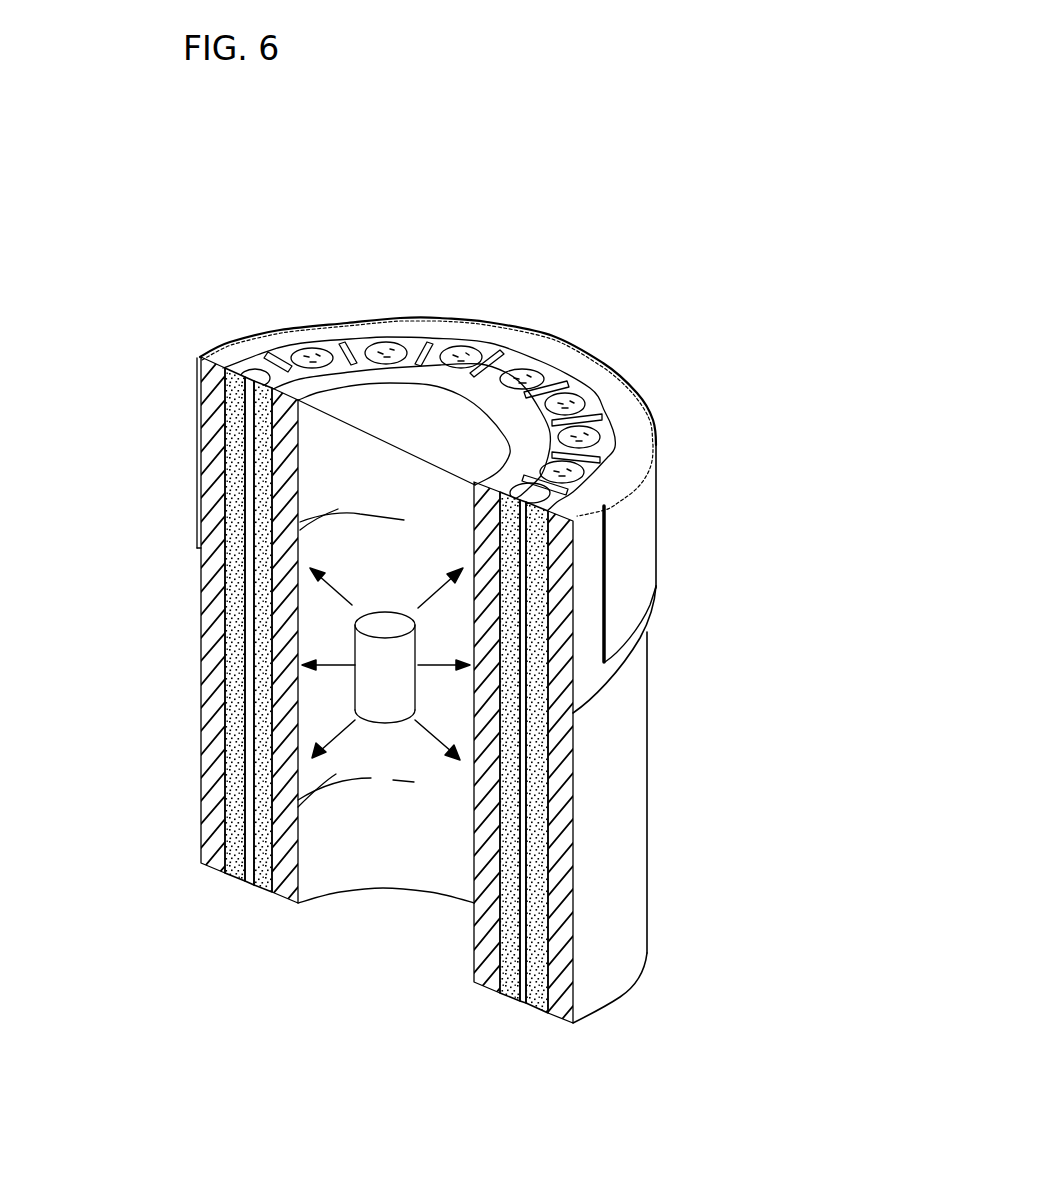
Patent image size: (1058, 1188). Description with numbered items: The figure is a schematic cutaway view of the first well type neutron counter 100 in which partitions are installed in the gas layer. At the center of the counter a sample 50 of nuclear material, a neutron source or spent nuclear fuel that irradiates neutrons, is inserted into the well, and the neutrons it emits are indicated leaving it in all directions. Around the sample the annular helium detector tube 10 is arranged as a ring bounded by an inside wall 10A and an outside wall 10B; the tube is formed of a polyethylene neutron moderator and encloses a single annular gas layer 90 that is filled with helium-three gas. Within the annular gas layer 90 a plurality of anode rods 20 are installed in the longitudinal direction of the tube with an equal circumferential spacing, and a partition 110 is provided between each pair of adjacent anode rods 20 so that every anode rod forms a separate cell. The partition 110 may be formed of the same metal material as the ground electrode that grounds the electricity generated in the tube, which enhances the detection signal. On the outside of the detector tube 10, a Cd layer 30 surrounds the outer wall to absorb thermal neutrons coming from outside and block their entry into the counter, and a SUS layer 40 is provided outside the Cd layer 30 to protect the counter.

The He-3 detector tube 10 is at (563, 683).
The inside wall 10A is at (562, 832).
The outside wall 10B is at (440, 892).
The anode rod 20 is at (535, 737).
The Cd layer 30 is at (587, 622).
The SUS layer 40 is at (633, 523).
The sample of nuclear material 50 is at (370, 688).
The annular gas layer 90 is at (232, 645).
The first well type neutron counter 100 is at (832, 128).
The partition 110 is at (561, 381).